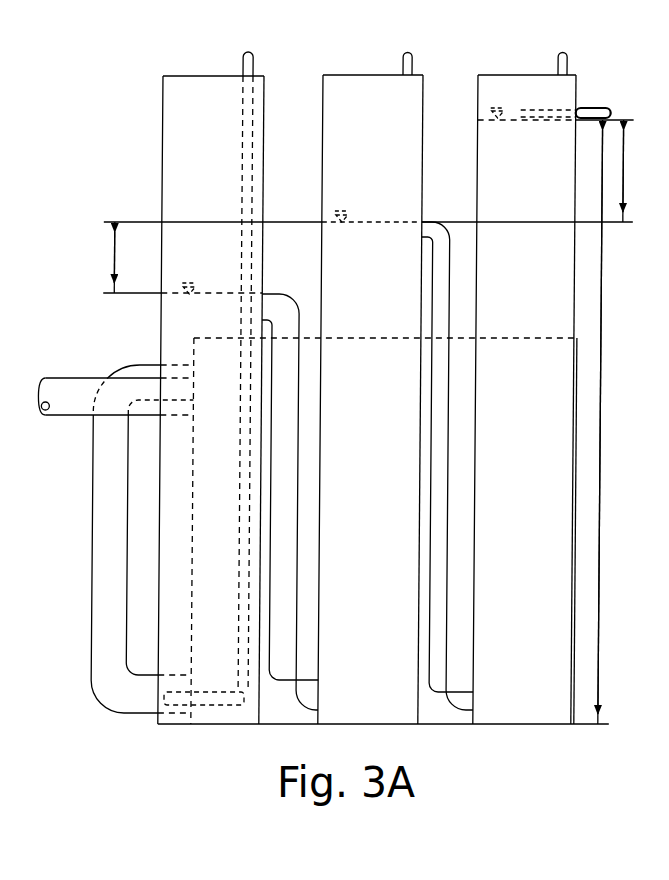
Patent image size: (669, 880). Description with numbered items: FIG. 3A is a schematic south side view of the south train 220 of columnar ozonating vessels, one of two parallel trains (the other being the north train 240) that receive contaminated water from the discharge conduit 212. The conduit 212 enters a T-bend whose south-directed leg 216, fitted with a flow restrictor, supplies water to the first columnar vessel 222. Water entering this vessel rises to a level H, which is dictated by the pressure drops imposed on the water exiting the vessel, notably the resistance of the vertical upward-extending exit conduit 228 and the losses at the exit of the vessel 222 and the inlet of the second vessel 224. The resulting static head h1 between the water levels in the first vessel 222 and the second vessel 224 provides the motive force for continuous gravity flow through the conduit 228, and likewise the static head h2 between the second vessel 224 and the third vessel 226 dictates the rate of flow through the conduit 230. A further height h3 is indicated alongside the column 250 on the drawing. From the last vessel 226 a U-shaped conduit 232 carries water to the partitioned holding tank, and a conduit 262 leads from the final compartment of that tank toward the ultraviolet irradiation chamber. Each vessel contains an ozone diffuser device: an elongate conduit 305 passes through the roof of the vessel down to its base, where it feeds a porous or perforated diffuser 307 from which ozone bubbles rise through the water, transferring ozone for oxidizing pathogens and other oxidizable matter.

The south train 220 is at (150, 100).
The third columnar vessel 226 is at (264, 93).
The second columnar vessel 224 is at (424, 93).
The south-directed leg 216 is at (524, 380).
The first columnar vessel 222 is at (577, 274).
The elongate conduit 305 is at (254, 62).
The discharge conduit 212 is at (594, 106).
The exit conduit 228 is at (450, 233).
The conduit 230 is at (266, 292).
The conduit 262 is at (70, 416).
The U-shaped conduit 232 is at (143, 364).
The ozone diffuser 307 is at (213, 692).
The static head h1 is at (643, 171).
The static head h2 is at (96, 257).
The third height h3 is at (658, 341).
The water level H is at (615, 422).
The chamber wall 250 is at (657, 500).
The north train 240 is at (659, 700).